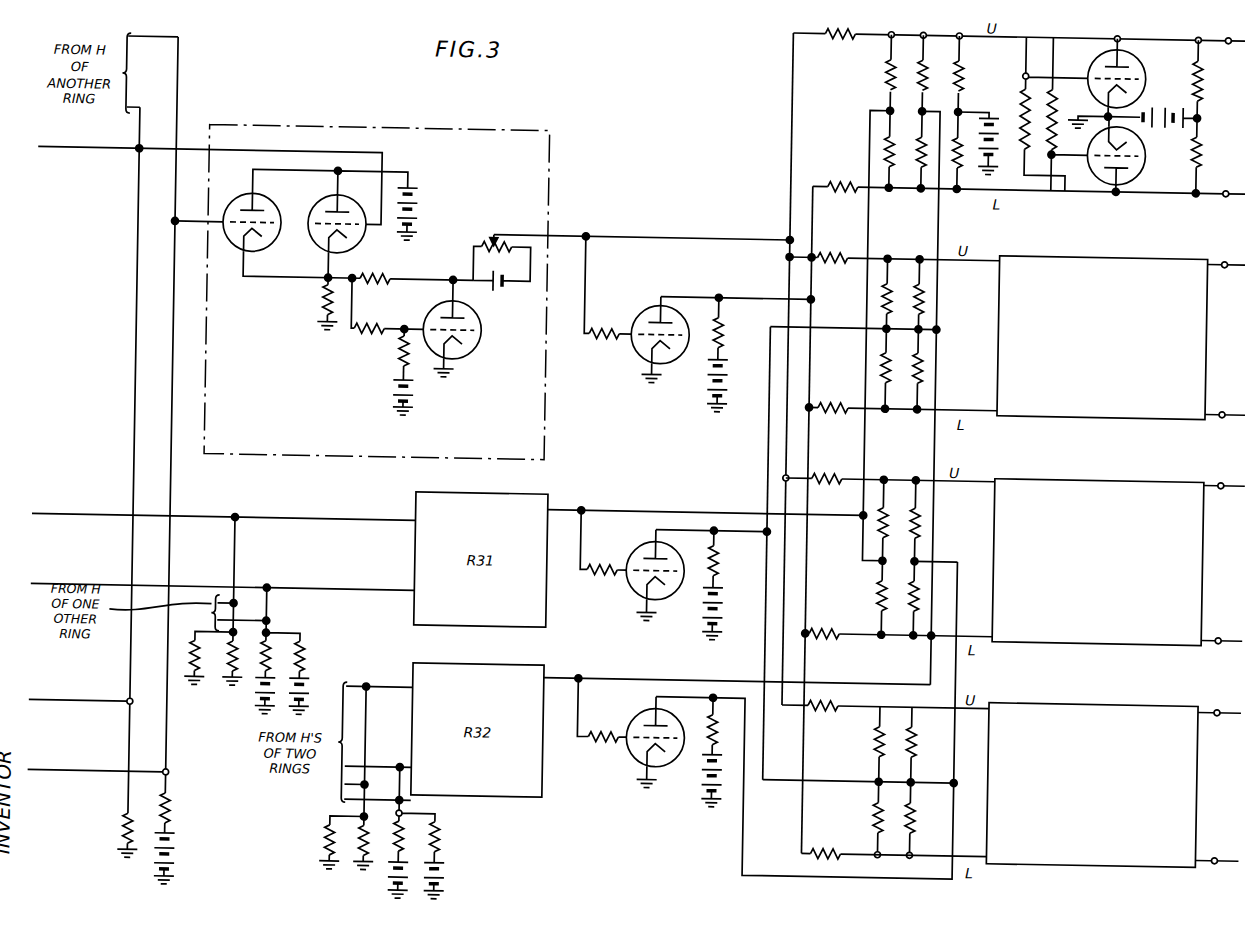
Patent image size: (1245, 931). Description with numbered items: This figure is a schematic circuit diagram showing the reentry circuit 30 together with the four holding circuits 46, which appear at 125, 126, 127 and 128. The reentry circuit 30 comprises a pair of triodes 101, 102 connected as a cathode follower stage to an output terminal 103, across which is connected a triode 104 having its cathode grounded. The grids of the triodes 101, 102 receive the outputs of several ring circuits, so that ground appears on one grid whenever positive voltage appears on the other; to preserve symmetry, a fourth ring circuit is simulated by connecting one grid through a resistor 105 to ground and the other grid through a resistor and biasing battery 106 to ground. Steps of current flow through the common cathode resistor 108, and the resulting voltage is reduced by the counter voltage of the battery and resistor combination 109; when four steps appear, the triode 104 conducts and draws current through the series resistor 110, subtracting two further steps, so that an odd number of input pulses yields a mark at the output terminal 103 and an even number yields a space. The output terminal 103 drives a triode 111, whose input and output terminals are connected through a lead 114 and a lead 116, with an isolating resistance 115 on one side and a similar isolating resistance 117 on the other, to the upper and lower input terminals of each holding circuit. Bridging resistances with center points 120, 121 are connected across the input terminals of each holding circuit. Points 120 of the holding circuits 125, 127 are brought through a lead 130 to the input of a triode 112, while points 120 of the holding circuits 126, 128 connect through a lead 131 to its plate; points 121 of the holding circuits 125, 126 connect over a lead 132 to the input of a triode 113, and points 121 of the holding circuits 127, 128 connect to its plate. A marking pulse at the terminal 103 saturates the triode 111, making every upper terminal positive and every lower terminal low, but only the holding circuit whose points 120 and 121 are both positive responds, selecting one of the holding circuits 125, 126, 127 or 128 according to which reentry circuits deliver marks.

The reentry circuit 30 is at (377, 292).
The holding circuits 46 is at (1161, 580).
The triode 101 is at (280, 205).
The triode 102 is at (312, 250).
The output terminal 103 is at (563, 235).
The triode 104 is at (471, 354).
The resistor 105 is at (204, 668).
The resistor and biasing battery 106 is at (277, 653).
The cathode resistor 108 is at (320, 304).
The battery and resistor combination 109 is at (488, 238).
The series resistor 110 is at (385, 258).
The triode 111 is at (637, 355).
The triode 112 is at (636, 591).
The triode 113 is at (639, 759).
The lead 114 is at (786, 89).
The isolating resistance 115 is at (833, 40).
The lead 116 is at (808, 375).
The isolating resistance 117 is at (836, 181).
The bridging resistance center point 120 is at (884, 106).
The bridging resistance center point 121 is at (918, 106).
The holding circuit 125 is at (1133, 174).
The holding circuit 126 is at (1077, 250).
The holding circuit 127 is at (1117, 461).
The holding circuit 128 is at (1112, 673).
The lead 130 is at (596, 512).
The lead 131 is at (768, 450).
The lead 132 is at (616, 650).